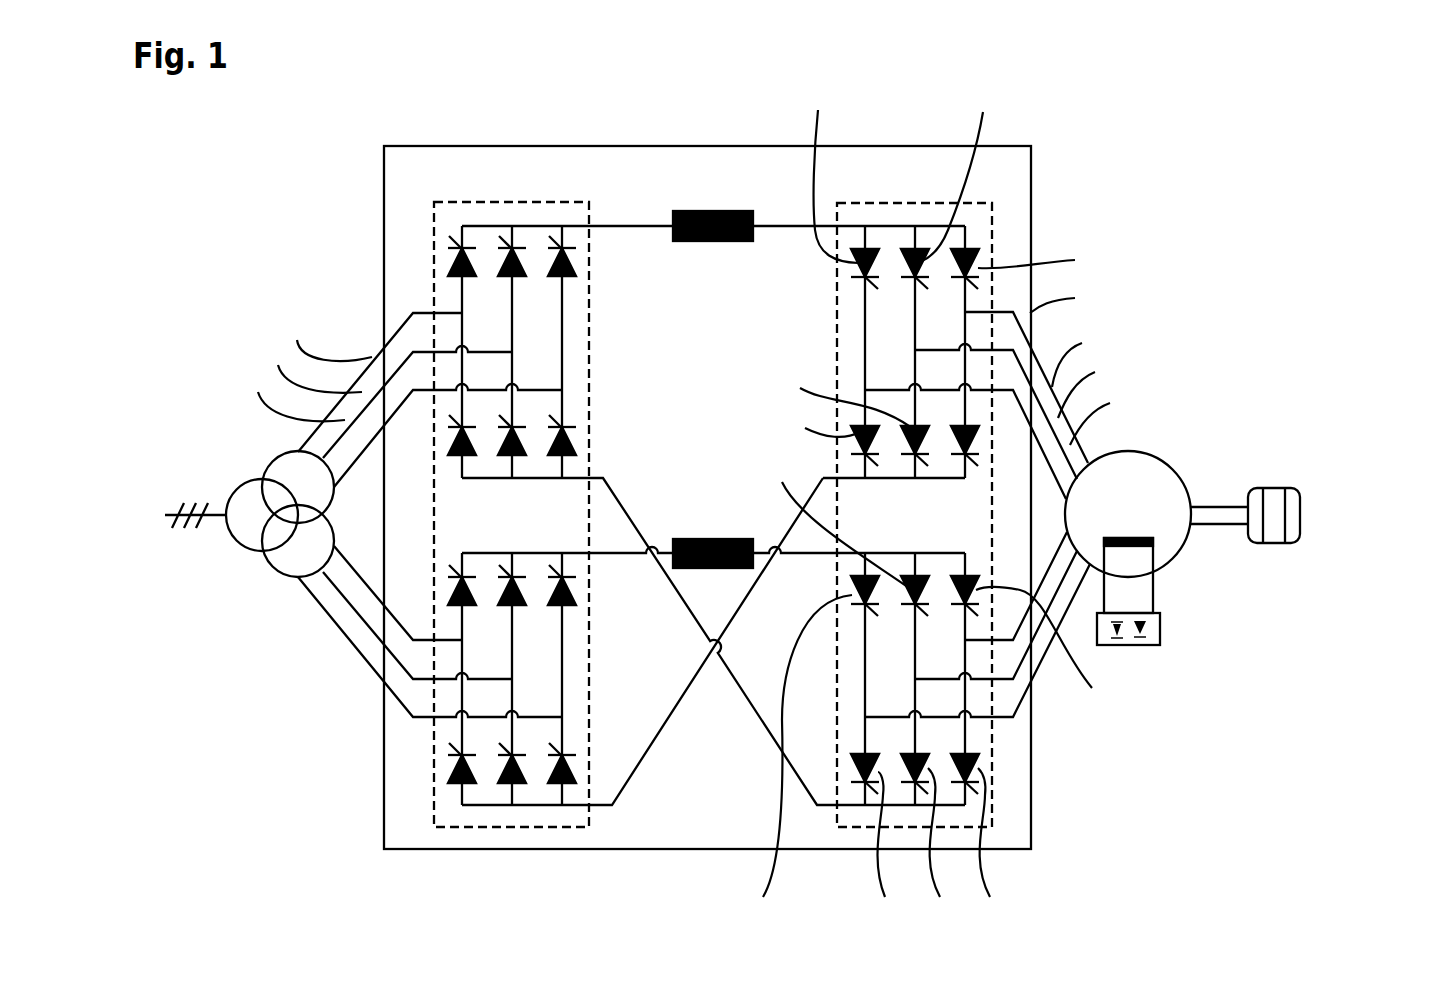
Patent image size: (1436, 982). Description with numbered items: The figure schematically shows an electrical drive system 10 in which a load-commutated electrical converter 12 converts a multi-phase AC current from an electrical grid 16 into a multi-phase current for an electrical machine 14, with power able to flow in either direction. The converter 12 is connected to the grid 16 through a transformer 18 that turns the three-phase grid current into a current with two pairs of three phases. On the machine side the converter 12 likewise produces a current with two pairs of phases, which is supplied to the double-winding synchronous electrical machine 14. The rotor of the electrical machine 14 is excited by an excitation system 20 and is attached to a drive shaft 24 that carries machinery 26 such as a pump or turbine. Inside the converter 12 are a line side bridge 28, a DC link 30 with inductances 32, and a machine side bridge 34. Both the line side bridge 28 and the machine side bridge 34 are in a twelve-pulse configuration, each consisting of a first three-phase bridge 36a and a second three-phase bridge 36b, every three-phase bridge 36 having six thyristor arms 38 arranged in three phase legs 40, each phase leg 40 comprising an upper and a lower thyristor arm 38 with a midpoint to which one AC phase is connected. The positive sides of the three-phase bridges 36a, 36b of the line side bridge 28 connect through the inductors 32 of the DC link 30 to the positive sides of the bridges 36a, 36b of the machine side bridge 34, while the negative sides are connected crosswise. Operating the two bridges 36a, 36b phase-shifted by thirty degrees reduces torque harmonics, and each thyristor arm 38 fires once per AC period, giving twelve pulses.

The electrical drive system 10 is at (1210, 138).
The electrical converter 12 is at (1033, 806).
The electrical machine 14 is at (1165, 460).
The electrical grid 16 is at (176, 466).
The transformer 18 is at (290, 456).
The excitation system 20 is at (1162, 628).
The drive shaft 24 is at (1220, 505).
The machinery 26 is at (1302, 515).
The line side bridge 28 is at (512, 202).
The DC link 30 is at (722, 325).
The inductances 32 is at (712, 243).
The machine side bridge 34 is at (930, 203).
The three-phase bridge 36 is at (712, 499).
The first three-phase bridge 36a is at (432, 222).
The second three-phase bridge 36b is at (432, 797).
The thyristor arm 38 is at (452, 259).
The phase leg 40 is at (457, 198).